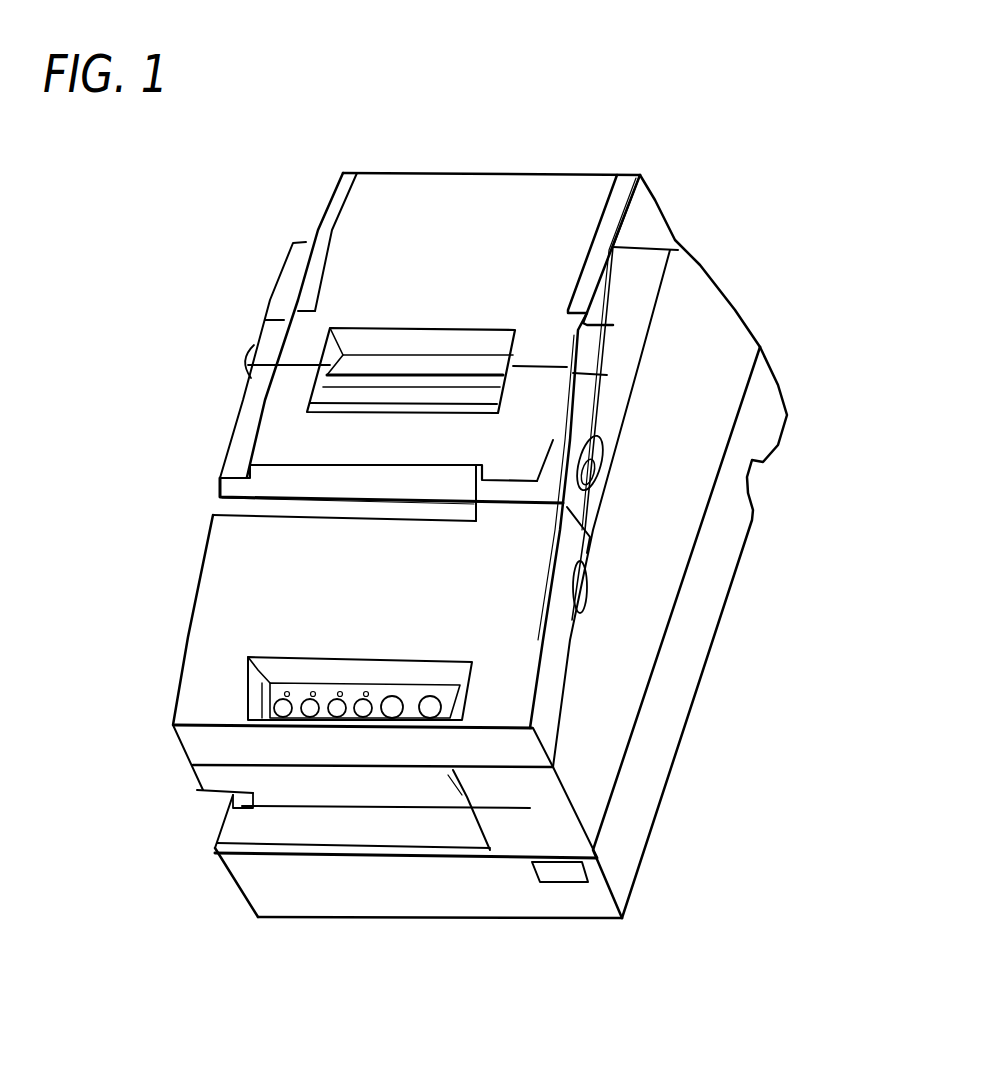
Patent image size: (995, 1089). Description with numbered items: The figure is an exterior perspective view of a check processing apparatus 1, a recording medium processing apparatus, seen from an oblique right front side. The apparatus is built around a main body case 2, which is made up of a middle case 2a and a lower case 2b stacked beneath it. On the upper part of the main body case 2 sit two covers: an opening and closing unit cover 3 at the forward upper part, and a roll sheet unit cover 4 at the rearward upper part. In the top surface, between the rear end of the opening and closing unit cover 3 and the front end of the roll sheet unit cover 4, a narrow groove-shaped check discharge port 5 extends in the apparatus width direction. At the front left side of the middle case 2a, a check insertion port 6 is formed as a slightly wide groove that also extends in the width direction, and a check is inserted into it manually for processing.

The check processing apparatus 1 is at (140, 364).
The main body case 2 is at (803, 203).
The middle case 2a is at (722, 308).
The lower case 2b is at (767, 397).
The opening and closing unit cover 3 is at (208, 625).
The roll sheet unit cover 4 is at (351, 228).
The check discharge port 5 is at (400, 510).
The check insertion port 6 is at (303, 804).